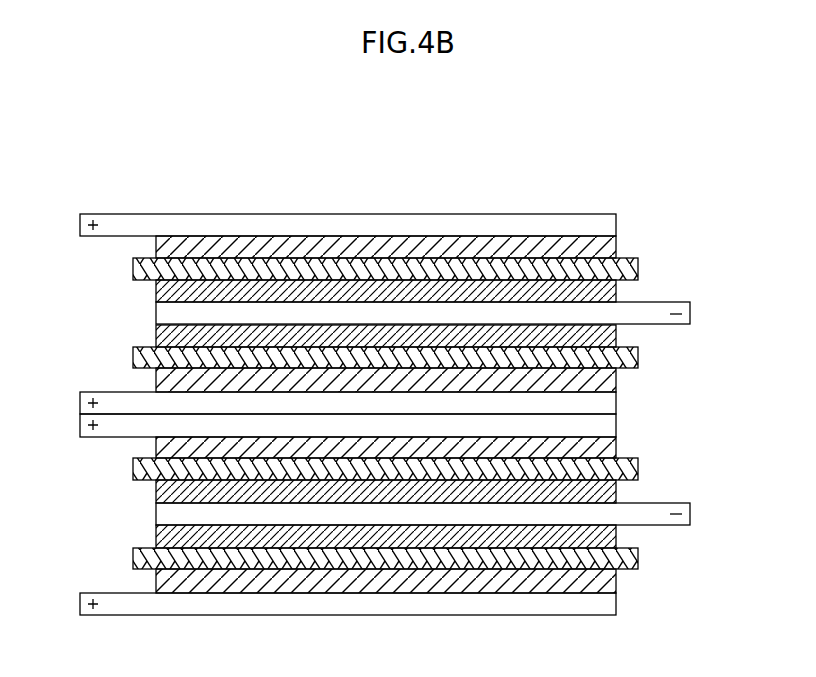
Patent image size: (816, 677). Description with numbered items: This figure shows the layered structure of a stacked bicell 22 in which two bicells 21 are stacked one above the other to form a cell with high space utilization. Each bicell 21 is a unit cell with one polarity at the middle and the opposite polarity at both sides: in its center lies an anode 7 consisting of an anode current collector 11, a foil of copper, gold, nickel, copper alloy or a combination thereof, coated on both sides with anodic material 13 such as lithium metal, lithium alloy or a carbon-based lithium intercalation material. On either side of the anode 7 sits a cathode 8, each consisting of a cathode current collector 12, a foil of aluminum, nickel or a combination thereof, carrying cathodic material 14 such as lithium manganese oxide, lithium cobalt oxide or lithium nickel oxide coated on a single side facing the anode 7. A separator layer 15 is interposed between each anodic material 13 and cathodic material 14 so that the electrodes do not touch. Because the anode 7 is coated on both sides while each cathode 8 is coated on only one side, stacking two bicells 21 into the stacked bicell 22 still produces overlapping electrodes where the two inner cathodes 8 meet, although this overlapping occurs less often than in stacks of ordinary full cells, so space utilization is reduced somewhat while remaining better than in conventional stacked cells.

The anode 7 is at (755, 272).
The cathode 8 is at (684, 171).
The anode current collector 11 is at (690, 318).
The cathode current collector 12 is at (617, 215).
The anodic material 13 is at (617, 292).
The cathodic material 14 is at (610, 247).
The separator 15 is at (133, 270).
The bicell 21 is at (65, 215).
The stacked bicell 22 is at (735, 431).